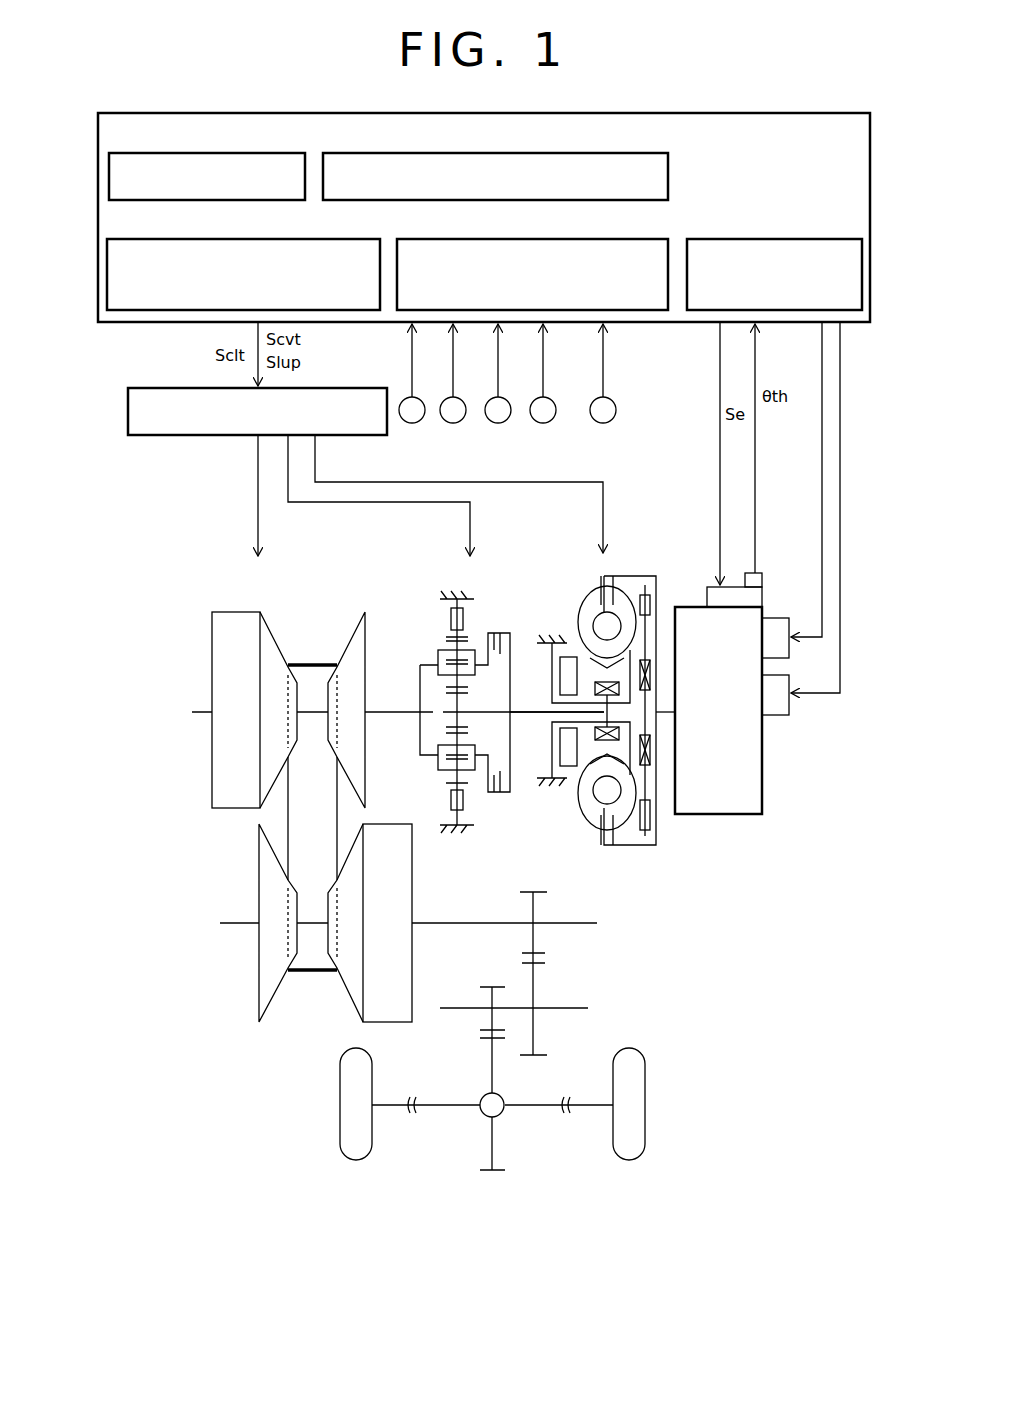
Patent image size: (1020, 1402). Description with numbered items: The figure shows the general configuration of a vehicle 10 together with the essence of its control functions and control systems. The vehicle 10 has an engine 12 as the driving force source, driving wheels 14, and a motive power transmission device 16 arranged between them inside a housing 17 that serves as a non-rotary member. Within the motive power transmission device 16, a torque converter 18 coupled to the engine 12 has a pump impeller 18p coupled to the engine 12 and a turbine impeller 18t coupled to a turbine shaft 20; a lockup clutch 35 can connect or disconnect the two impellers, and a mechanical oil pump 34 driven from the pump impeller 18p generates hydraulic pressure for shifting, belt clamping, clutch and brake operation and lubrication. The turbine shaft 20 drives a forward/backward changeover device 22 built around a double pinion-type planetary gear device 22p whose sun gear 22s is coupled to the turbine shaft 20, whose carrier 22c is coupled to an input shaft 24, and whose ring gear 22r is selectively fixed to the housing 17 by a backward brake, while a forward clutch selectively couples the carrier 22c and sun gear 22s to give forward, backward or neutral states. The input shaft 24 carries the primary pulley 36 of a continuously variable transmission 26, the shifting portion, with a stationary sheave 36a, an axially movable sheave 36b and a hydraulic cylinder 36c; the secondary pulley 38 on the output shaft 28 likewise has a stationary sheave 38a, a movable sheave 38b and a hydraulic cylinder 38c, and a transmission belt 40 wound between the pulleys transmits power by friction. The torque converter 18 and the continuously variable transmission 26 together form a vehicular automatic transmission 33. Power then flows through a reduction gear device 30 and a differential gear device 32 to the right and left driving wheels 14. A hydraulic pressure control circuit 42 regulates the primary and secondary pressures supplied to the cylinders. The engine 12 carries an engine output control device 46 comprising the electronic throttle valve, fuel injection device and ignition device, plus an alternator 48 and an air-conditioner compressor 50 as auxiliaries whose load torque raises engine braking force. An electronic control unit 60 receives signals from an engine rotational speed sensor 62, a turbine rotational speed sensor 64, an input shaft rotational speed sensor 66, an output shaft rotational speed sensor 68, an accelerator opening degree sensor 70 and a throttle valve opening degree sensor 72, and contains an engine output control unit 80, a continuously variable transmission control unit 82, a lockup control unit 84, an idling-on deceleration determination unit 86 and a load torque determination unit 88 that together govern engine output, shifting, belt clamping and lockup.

The vehicle 10 is at (740, 86).
The engine 12 is at (725, 800).
The driving wheels 14 is at (347, 1128).
The motive power transmission device 16 is at (616, 497).
The housing 17 is at (472, 596).
The torque converter 18 is at (617, 701).
The pump impeller 18p is at (592, 820).
The turbine impeller 18t is at (615, 830).
The turbine shaft 20 is at (522, 718).
The forward/backward changeover device 22 is at (457, 665).
The planetary gear device 22p is at (457, 570).
The carrier 22c is at (440, 655).
The sun gear 22s is at (453, 720).
The ring gear 22r is at (450, 791).
The input shaft 24 is at (388, 708).
The continuously variable transmission 26 is at (292, 1072).
The output shaft 28 is at (470, 927).
The reduction gear device 30 is at (594, 984).
The differential gear device 32 is at (486, 1108).
The vehicular automatic transmission 33 is at (378, 554).
The mechanical oil pump 34 is at (567, 658).
The lockup clutch 35 is at (666, 597).
The primary pulley 36 is at (270, 717).
The stationary sheave 36a is at (355, 640).
The movable sheave 36b is at (268, 640).
The hydraulic cylinder 36c is at (218, 630).
The secondary pulley 38 is at (327, 947).
The stationary sheave 38a is at (267, 982).
The movable sheave 38b is at (355, 975).
The hydraulic cylinder 38c is at (402, 905).
The transmission belt 40 is at (313, 660).
The hydraulic pressure control circuit 42 is at (222, 435).
The engine output control device 46 is at (757, 598).
The alternator 48 is at (770, 628).
The compressor 50 is at (775, 700).
The electronic control unit 60 is at (802, 113).
The engine rotational speed sensor 62 is at (410, 423).
The turbine rotational speed sensor 64 is at (451, 423).
The input shaft rotational speed sensor 66 is at (496, 423).
The output shaft rotational speed sensor 68 is at (541, 423).
The accelerator opening degree sensor 70 is at (601, 423).
The throttle valve opening degree sensor 72 is at (749, 580).
The engine output control unit 80 is at (130, 153).
The continuously variable transmission control unit 82 is at (345, 153).
The lockup control unit 84 is at (130, 239).
The idling-on deceleration determination unit 86 is at (425, 239).
The load torque determination unit 88 is at (715, 239).